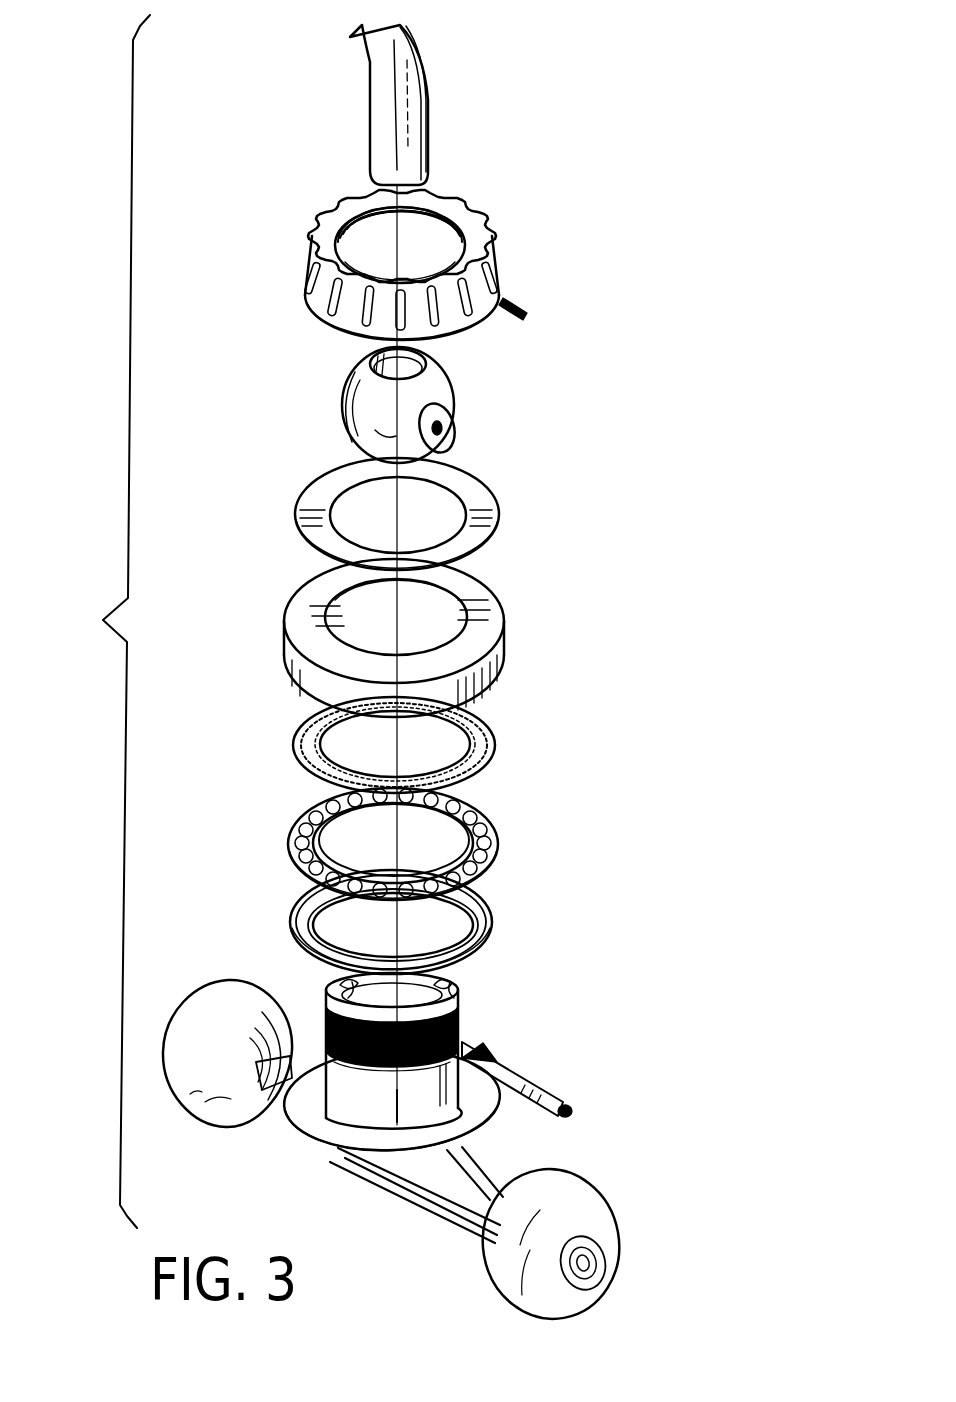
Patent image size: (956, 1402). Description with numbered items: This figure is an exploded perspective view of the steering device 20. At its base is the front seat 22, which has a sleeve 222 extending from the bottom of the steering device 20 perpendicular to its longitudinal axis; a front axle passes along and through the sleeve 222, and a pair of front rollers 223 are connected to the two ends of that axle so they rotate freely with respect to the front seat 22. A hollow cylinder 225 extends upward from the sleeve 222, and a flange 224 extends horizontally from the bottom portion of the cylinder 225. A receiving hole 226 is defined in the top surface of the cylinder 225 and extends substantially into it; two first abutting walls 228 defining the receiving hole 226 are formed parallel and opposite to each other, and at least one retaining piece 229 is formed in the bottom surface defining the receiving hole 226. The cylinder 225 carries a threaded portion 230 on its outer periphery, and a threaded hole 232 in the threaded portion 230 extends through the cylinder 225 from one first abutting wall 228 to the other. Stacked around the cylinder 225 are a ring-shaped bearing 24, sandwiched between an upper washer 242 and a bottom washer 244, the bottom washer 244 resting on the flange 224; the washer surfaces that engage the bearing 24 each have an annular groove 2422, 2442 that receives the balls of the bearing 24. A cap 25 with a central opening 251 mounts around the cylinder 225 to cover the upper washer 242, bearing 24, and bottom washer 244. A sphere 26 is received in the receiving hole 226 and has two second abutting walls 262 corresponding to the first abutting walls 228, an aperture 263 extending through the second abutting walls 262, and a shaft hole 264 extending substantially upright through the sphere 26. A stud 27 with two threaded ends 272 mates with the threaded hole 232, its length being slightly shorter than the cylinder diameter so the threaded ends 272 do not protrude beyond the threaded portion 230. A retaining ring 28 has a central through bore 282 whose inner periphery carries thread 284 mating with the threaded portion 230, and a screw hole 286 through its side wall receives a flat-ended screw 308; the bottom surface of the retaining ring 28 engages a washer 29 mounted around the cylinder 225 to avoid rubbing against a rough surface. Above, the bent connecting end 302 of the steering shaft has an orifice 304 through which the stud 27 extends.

The steering device 20 is at (106, 621).
The connecting end 302 is at (433, 105).
The orifice 304 is at (460, 105).
The retaining ring 28 is at (406, 256).
The through bore 282 is at (351, 236).
The thread 284 is at (422, 227).
The screw hole 286 is at (447, 287).
The screw 308 is at (565, 311).
The sphere 26 is at (403, 404).
The shaft hole 264 is at (449, 361).
The second abutting walls 262 is at (479, 425).
The aperture 263 is at (485, 442).
The washer 29 is at (433, 514).
The cap 25 is at (400, 638).
The opening 251 is at (455, 617).
The upper washer 242 is at (408, 743).
The annular groove 2422 is at (498, 712).
The bearing 24 is at (432, 843).
The bottom washer 244 is at (446, 914).
The annular groove 2442 is at (455, 925).
The front seat 22 is at (432, 1130).
The threaded portion 230 is at (292, 1007).
The threaded hole 232 is at (332, 1000).
The receiving hole 226 is at (439, 975).
The retaining piece 229 is at (489, 988).
The first abutting walls 228 is at (432, 1051).
The flange 224 is at (421, 1099).
The stud 27 is at (556, 1083).
The threaded ends 272 is at (604, 1107).
The cylinder 225 is at (366, 1152).
The sleeve 222 is at (416, 1208).
The front rollers 223 is at (586, 1243).